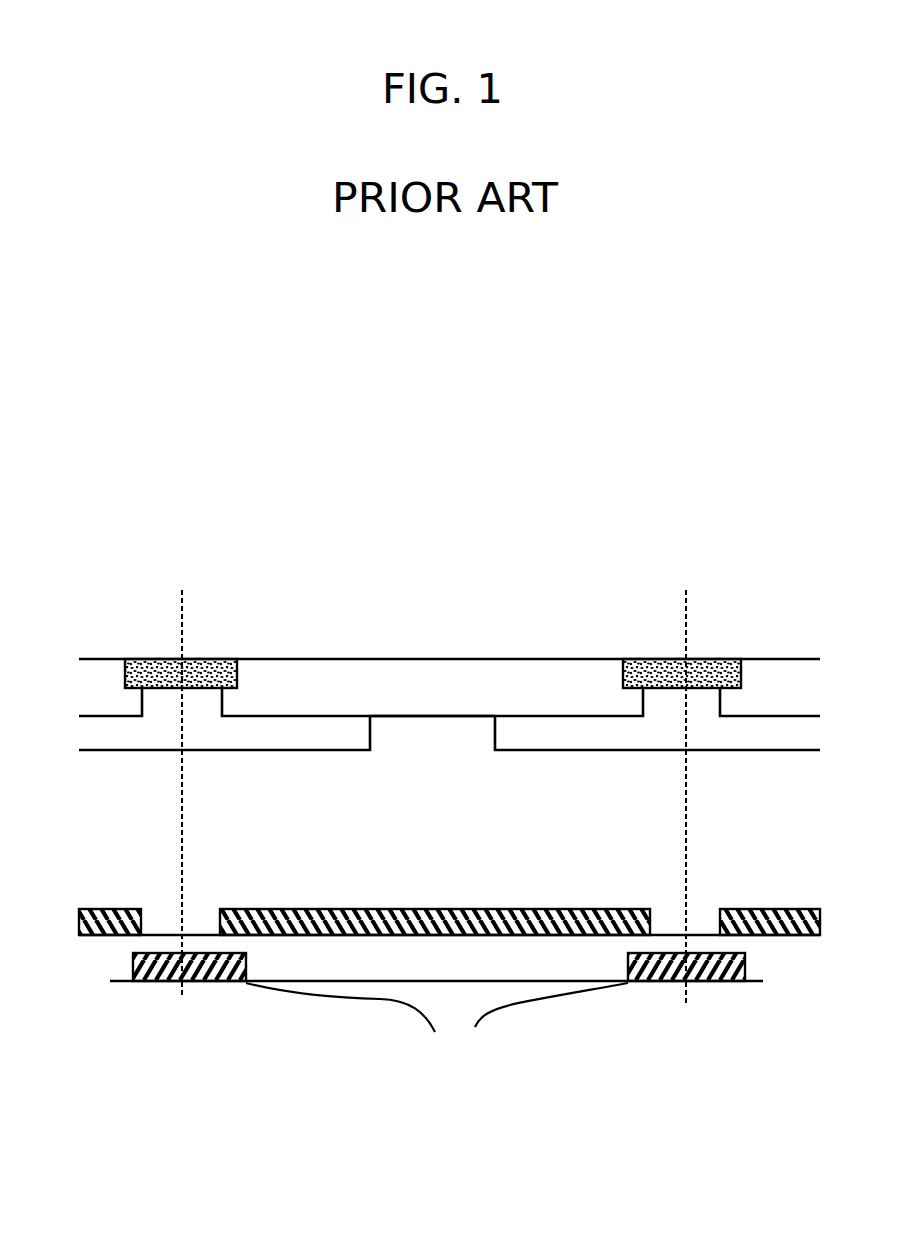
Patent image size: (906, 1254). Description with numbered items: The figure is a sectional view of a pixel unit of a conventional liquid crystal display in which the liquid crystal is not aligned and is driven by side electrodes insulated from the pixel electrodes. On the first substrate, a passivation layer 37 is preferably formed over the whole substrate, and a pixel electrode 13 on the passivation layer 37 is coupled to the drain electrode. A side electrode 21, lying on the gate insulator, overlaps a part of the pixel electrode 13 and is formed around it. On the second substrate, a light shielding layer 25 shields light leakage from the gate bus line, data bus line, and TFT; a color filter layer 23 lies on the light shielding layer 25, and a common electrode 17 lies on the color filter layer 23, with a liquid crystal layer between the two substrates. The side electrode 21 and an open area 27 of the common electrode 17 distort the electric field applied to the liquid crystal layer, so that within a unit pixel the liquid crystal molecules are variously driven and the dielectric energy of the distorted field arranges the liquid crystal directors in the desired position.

The pixel electrode 13 is at (638, 908).
The common electrode 17 is at (713, 728).
The side electrode 21 is at (439, 1010).
The color filter layer 23 is at (326, 695).
The light shielding layer 25 is at (205, 660).
The open area 27 is at (449, 720).
The passivation layer 37 is at (313, 963).